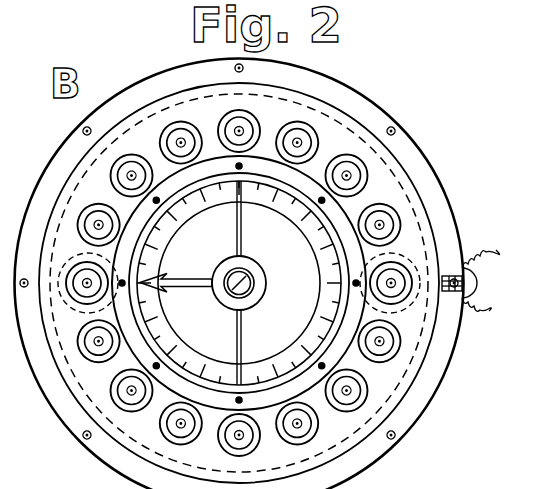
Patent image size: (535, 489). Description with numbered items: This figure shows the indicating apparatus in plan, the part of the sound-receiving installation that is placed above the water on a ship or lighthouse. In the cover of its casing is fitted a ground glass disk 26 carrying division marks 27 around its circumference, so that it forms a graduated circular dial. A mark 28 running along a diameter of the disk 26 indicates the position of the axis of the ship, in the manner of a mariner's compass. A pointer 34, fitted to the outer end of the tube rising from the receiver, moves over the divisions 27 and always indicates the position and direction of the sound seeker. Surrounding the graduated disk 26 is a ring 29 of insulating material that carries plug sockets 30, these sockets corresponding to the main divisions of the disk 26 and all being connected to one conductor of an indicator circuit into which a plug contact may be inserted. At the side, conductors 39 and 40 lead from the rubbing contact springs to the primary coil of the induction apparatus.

The ground glass disk 26 is at (290, 282).
The division marks 27 is at (168, 242).
The mark 28 is at (240, 335).
The ring 29 is at (88, 309).
The plug sockets 30 is at (350, 176).
The pointer 34 is at (183, 287).
The conductor 39 is at (474, 258).
The conductor 40 is at (473, 312).